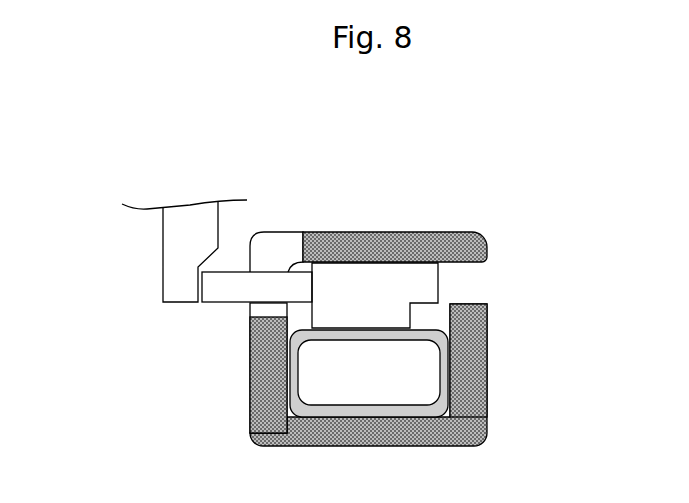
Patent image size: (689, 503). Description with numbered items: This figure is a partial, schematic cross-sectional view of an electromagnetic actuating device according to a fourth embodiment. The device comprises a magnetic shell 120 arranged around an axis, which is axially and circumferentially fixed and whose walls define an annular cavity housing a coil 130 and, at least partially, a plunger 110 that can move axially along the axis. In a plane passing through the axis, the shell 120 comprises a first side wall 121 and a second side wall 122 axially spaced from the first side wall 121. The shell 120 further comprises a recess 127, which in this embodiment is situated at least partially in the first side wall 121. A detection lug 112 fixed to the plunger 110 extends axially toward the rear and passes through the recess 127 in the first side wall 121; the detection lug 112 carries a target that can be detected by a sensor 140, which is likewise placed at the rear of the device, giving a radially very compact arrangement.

The plunger 110 is at (380, 278).
The detection lug 112 is at (237, 302).
The magnetic shell 120 is at (488, 420).
The first side wall 121 is at (267, 370).
The second side wall 122 is at (473, 337).
The recess 127 is at (250, 270).
The coil 130 is at (425, 364).
The sensor 140 is at (163, 302).